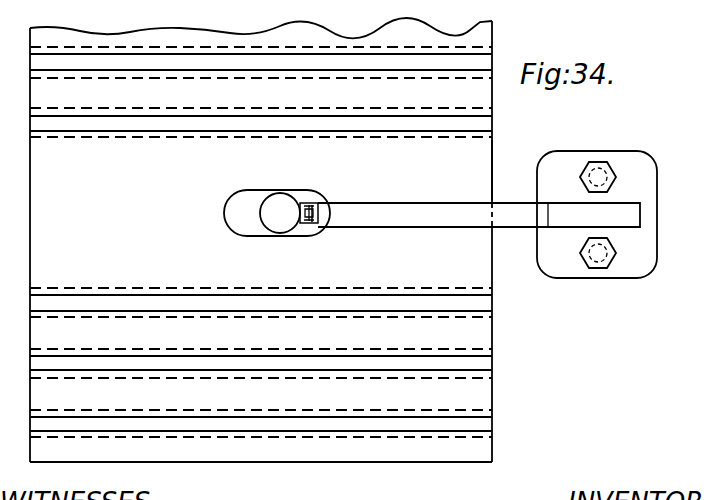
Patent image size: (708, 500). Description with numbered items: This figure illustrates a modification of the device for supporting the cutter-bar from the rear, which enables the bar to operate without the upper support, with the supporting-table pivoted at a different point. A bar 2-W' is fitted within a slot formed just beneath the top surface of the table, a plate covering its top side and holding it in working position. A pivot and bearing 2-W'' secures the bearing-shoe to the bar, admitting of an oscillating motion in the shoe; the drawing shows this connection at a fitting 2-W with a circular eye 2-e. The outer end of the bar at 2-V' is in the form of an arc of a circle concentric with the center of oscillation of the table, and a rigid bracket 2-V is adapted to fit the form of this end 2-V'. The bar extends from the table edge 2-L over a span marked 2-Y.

The span distance of the bar 2-Y is at (420, 173).
The coupling fitting 2-W is at (295, 198).
The eye of the coupling 2-e is at (277, 213).
The bar 2-W' is at (479, 215).
The pivot and bearing 2-W'' is at (312, 233).
The edge rail of the panel 2-L is at (507, 170).
The rigid bracket 2-V is at (614, 215).
The outer end of the bar 2-V' is at (597, 214).